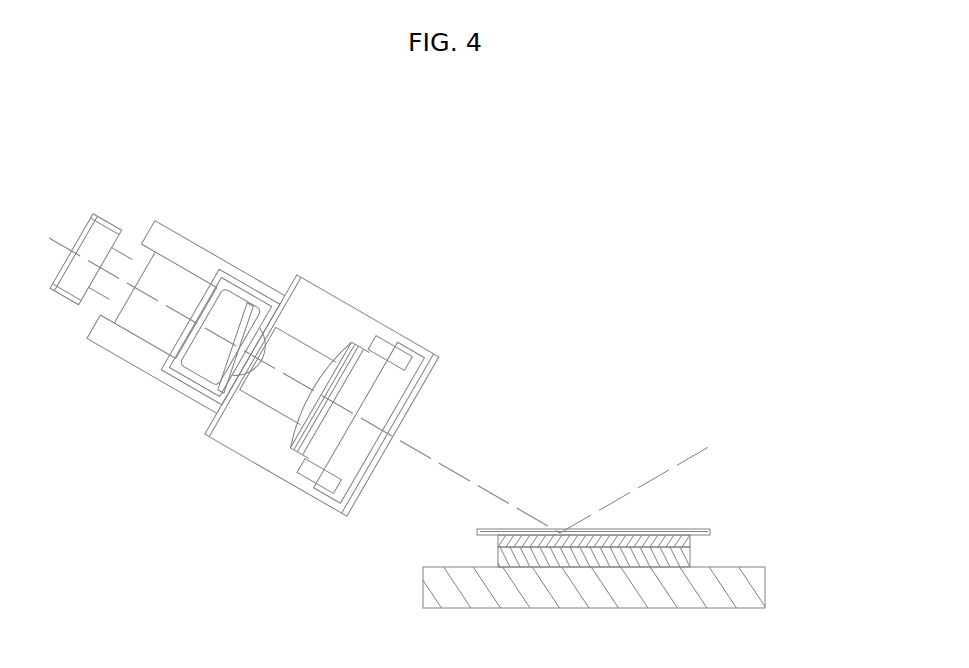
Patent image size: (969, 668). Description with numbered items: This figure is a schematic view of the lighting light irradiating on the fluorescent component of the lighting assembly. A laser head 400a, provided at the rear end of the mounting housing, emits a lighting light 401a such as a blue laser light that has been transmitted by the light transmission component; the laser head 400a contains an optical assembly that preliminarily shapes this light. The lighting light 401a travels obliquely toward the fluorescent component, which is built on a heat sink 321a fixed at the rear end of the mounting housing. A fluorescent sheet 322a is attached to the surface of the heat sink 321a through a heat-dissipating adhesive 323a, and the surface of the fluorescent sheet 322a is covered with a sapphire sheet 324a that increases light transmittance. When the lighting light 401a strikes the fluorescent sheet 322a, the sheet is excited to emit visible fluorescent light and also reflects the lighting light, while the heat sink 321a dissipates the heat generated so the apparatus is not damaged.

The laser head 400a is at (201, 258).
The lighting light 401a is at (478, 482).
The heat sink 321a is at (743, 592).
The fluorescent sheet 322a is at (692, 539).
The heat-dissipating adhesive 323a is at (692, 563).
The sapphire sheet 324a is at (708, 531).